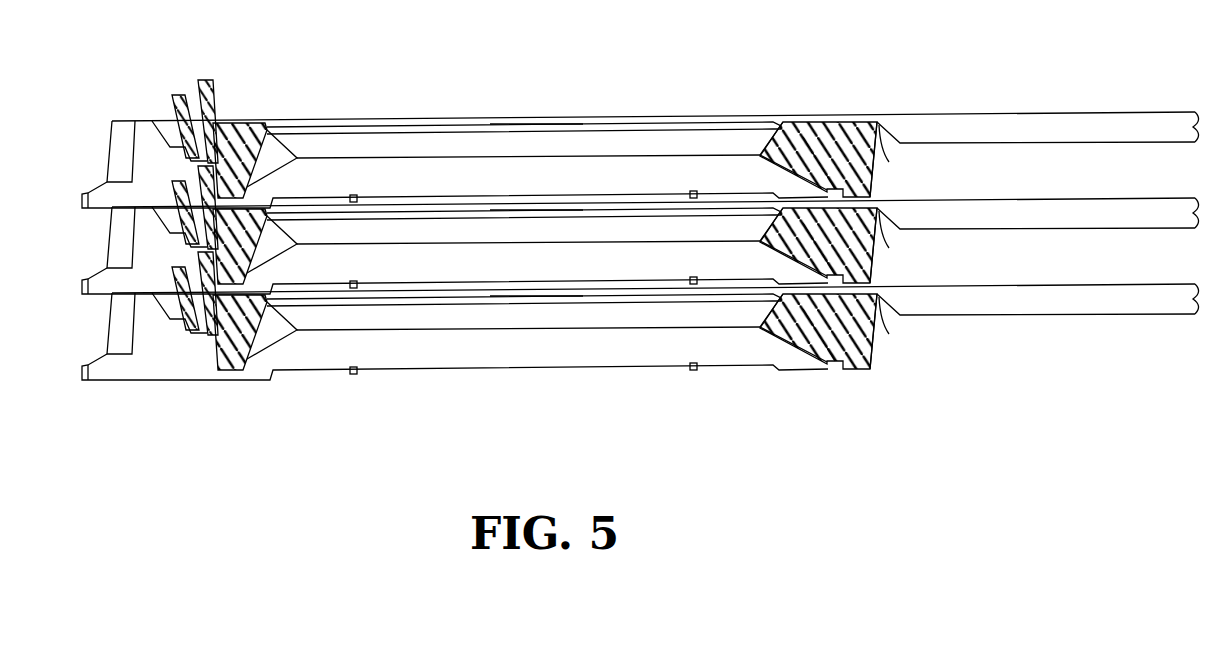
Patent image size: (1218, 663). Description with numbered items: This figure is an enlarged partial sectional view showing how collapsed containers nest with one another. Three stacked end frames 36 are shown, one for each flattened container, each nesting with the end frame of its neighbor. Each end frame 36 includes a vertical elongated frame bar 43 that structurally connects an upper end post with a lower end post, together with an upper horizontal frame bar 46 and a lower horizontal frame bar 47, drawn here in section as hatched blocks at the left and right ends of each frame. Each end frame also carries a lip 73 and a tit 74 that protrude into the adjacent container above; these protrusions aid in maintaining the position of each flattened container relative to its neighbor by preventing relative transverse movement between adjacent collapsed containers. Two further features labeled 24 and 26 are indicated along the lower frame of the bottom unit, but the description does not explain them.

The first locating aperture 24 is at (355, 376).
The second locating aperture 26 is at (693, 372).
The end frame 36 is at (887, 160).
The vertical elongated frame bar 43 is at (506, 187).
The upper horizontal frame bar 46 is at (246, 174).
The lower horizontal frame bar 47 is at (808, 152).
The lip 73 is at (183, 93).
The tit 74 is at (212, 92).